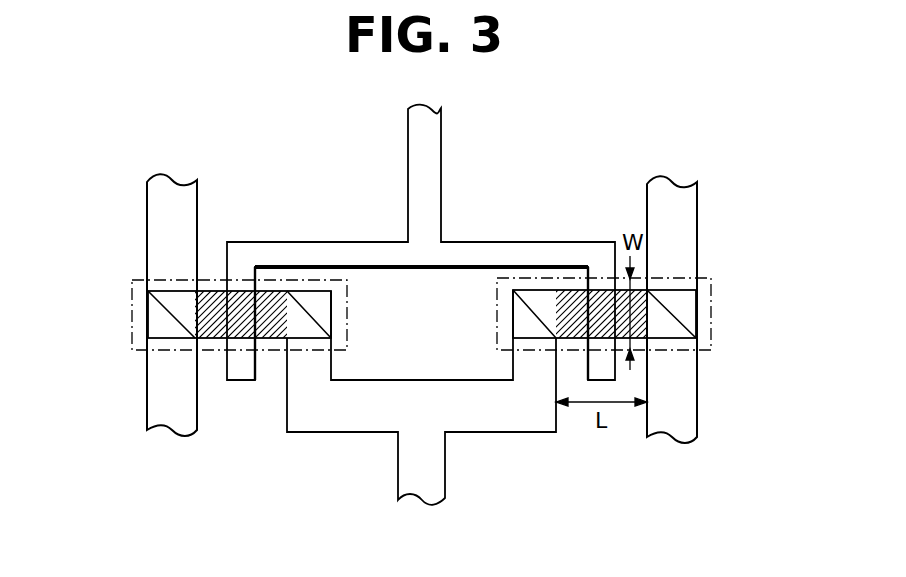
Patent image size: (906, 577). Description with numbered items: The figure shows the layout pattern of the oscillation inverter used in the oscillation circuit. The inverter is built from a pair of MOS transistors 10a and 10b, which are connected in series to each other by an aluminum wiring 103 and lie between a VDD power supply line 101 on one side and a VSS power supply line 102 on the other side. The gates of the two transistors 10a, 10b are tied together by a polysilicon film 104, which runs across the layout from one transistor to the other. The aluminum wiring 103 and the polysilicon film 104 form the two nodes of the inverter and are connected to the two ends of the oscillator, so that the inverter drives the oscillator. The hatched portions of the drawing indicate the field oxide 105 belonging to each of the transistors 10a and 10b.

The VDD power supply line 101 is at (147, 198).
The VSS power supply line 102 is at (697, 200).
The aluminum wiring 103 is at (403, 380).
The polysilicon film 104 is at (483, 242).
The field oxide 105 is at (568, 288).
The MOS transistor 10a is at (132, 296).
The MOS transistor 10b is at (713, 295).